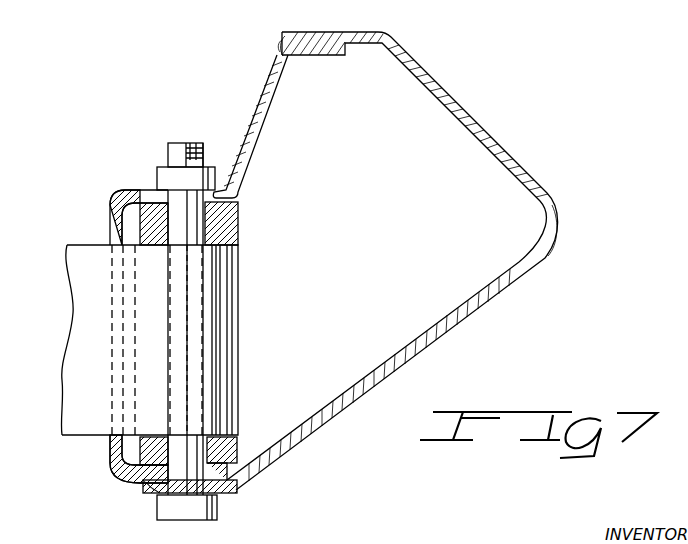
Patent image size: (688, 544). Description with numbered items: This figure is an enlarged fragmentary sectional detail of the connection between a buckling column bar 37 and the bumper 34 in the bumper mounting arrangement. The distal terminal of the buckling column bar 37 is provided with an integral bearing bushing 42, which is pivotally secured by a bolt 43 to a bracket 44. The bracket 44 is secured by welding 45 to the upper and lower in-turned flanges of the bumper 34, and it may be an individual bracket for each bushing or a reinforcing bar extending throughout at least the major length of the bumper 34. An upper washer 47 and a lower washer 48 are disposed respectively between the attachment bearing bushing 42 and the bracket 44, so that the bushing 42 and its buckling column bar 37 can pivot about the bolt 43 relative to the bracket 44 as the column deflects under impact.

The bumper 34 is at (463, 107).
The buckling column bar 37 is at (80, 257).
The bushing 42 is at (213, 325).
The bolt 43 is at (183, 210).
The bracket 44 is at (258, 134).
The welding 45 is at (280, 42).
The upper washer 47 is at (223, 222).
The lower washer 48 is at (225, 445).